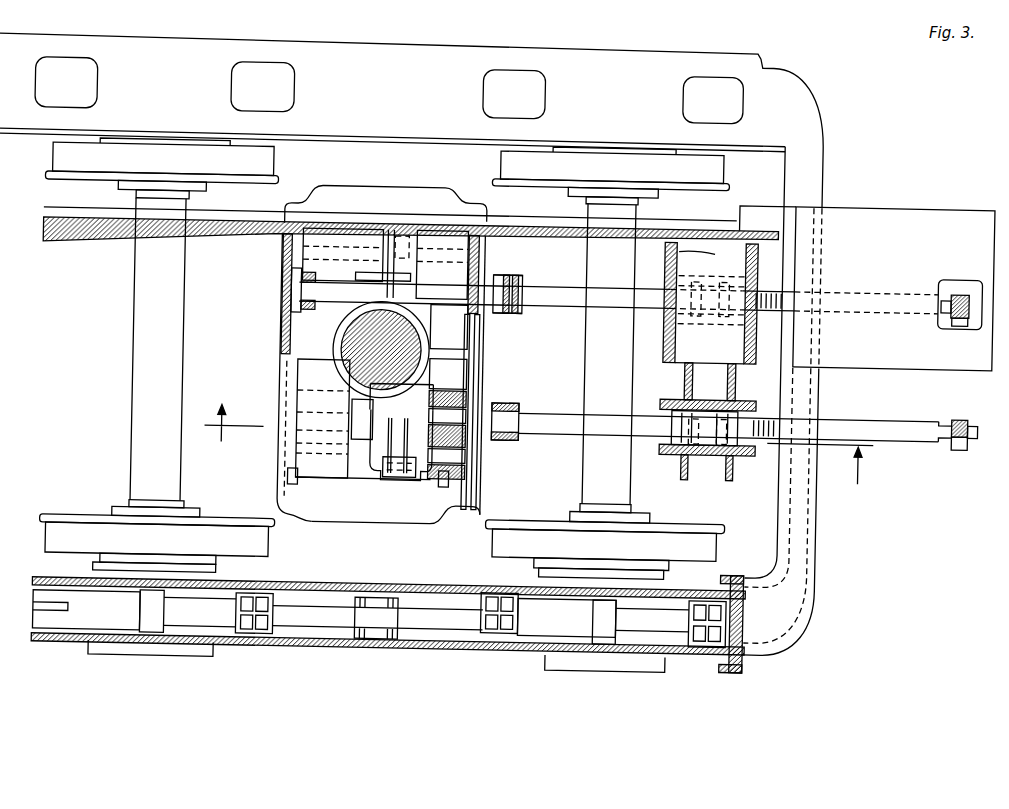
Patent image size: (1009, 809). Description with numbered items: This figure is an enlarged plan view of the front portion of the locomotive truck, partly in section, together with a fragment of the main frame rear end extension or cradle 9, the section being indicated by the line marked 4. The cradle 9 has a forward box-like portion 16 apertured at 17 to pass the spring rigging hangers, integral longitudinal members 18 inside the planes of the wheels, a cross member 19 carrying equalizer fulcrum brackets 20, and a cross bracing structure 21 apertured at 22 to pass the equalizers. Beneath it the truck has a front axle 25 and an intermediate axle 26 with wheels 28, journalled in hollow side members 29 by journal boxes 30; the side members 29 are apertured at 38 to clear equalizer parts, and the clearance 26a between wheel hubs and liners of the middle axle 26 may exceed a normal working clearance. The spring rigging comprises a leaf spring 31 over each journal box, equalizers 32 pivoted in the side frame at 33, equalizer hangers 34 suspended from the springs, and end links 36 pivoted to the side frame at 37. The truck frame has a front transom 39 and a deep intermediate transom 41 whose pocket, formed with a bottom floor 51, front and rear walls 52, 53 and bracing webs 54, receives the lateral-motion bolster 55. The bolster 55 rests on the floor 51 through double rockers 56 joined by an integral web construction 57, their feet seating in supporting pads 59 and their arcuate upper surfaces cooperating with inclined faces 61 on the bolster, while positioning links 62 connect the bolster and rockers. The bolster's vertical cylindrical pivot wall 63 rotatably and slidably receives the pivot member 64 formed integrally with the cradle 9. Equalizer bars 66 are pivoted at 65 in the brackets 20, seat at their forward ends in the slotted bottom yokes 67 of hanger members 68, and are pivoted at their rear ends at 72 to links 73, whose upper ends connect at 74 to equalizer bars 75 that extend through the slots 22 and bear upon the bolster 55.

The side members of the truck frame 29 is at (388, 34).
The apertures in truck side frame members 38 is at (389, 90).
The clearance between wheel hubs and liners 26a is at (63, 142).
The longitudinal members 18 is at (205, 230).
The bracing webs 54 is at (390, 178).
The positioning links 62 is at (423, 230).
The double rockers 56 is at (330, 254).
The integral web construction 57 is at (414, 258).
The apertures in cross bracing structure 22 is at (497, 270).
The pivot connection of links to equalizer bars 74 is at (529, 272).
The links 73 is at (527, 299).
The equalizer bars 75 is at (462, 306).
The cross bracing structure 21 is at (287, 317).
The main frame extension or cradle 9 is at (748, 192).
The equalizer bars 66 is at (608, 296).
The pivots of equalizer bars 65 is at (718, 312).
The cross member 19 is at (670, 332).
The front axle 25 is at (592, 346).
The forward box-like portion 16 is at (894, 289).
The hanger members 68 is at (957, 278).
The slotted bottom yokes 67 is at (967, 275).
The apertures in box-like portion 17 is at (958, 310).
The intermediate axle 26 is at (140, 337).
The pivot member 64 is at (307, 360).
The vertical cylindrical pivot wall 63 is at (345, 373).
The pivot of equalizer bars to links 72 is at (515, 393).
The equalizer fulcrum brackets 20 is at (672, 441).
The section line 4- 4 is at (538, 446).
The rear wall of transom recess 53 is at (287, 460).
The lateral-motion bolster 55 is at (364, 419).
The bottom floor 51 is at (357, 505).
The supporting pads 59 is at (310, 475).
The inclined faces 61 is at (438, 400).
The front wall of transom recess 52 is at (491, 460).
The wheels 28 is at (92, 513).
The front member or transom 39 is at (826, 513).
The intermediate transom structure 41 is at (379, 556).
The leaf spring 31 is at (360, 617).
The journal boxes 30 is at (150, 652).
The equalizer hangers 34 is at (258, 628).
The equalizer pivots 33 is at (372, 631).
The equalizers 32 is at (452, 620).
The end links 36 is at (756, 608).
The pivots of end links 37 is at (730, 652).